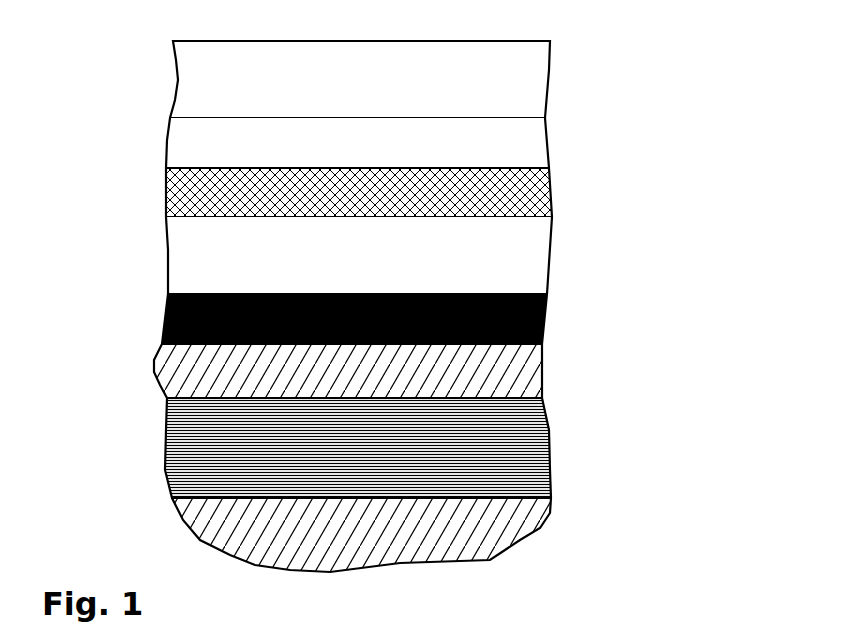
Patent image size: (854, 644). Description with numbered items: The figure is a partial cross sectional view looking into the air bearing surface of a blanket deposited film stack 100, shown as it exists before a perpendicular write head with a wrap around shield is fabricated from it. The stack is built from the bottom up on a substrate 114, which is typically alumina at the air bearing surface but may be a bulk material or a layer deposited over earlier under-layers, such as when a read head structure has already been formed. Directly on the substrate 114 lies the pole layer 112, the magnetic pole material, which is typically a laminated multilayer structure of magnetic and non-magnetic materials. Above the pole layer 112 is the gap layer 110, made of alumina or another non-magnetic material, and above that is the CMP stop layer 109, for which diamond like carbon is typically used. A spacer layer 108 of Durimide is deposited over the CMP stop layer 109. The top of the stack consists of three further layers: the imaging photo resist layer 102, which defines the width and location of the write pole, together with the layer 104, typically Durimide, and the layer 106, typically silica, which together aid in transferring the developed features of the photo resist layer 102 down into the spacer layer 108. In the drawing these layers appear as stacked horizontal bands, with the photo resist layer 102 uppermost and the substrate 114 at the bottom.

The film stack 100 is at (614, 70).
The imaging photo resist layer 102 is at (372, 100).
The layer 104 is at (376, 153).
The layer 106 is at (374, 205).
The spacer layer 108 is at (379, 265).
The CMP stop layer 109 is at (379, 331).
The gap layer 110 is at (381, 377).
The pole layer 112 is at (396, 458).
The substrate 114 is at (397, 540).